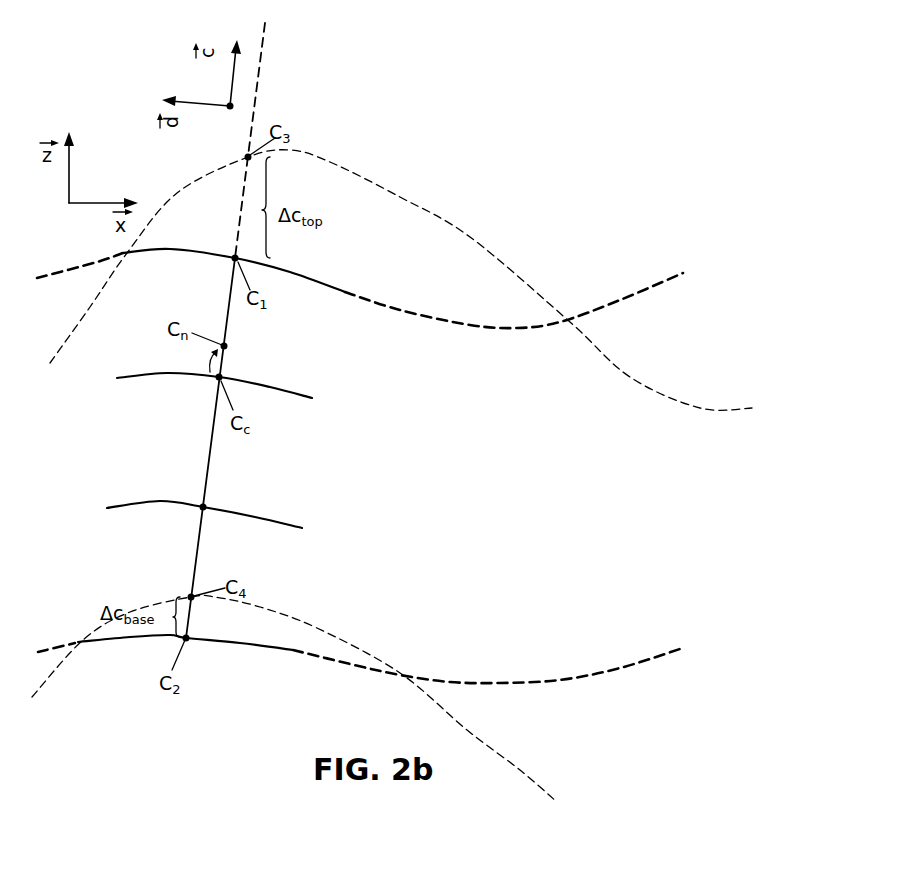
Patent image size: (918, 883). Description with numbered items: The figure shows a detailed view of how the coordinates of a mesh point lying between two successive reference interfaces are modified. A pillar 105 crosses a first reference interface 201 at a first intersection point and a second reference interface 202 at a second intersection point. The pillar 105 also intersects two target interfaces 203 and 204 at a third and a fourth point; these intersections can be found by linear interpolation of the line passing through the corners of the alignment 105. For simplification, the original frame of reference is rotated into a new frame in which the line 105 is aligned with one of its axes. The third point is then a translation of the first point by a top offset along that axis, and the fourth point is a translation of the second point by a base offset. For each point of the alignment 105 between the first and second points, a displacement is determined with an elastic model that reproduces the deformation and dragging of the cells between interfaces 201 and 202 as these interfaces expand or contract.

The pillar 105 is at (190, 618).
The reference interface 201 is at (660, 286).
The reference interface 202 is at (625, 669).
The target interface 203 is at (702, 407).
The target interface 204 is at (537, 784).